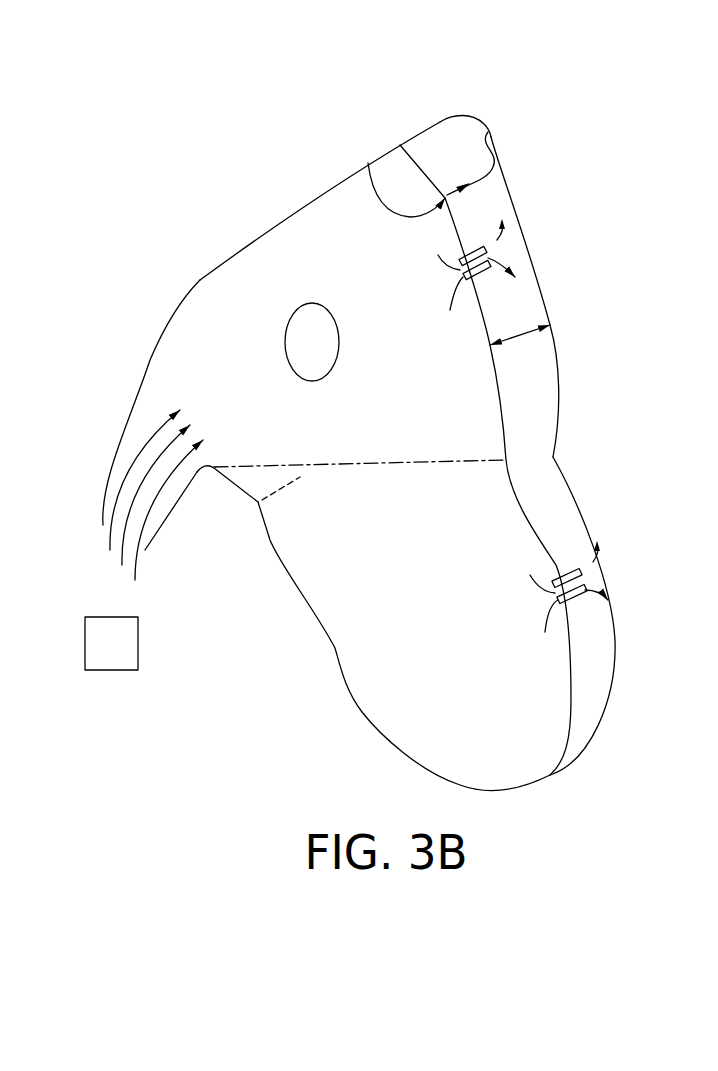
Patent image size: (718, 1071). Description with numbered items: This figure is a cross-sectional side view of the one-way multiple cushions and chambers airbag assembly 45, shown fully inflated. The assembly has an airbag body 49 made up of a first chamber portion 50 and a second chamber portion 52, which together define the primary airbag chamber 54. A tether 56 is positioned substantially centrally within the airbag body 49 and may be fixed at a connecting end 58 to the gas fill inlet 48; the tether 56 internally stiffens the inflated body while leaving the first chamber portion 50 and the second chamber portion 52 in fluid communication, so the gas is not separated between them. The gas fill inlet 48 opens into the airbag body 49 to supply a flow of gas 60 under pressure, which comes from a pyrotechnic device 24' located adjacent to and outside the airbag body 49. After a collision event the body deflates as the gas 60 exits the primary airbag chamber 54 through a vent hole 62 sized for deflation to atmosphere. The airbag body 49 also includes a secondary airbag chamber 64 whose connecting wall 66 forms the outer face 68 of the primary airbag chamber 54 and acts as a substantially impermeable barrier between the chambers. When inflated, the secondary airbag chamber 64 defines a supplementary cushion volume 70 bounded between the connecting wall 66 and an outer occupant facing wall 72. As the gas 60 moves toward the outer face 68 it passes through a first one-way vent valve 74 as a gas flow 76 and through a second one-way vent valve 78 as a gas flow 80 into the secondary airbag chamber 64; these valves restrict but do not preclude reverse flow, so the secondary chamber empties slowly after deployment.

The one-way multiple cushions and chambers airbag assembly 45 is at (380, 132).
The airbag body 49 is at (295, 210).
The first chamber portion 50 is at (258, 267).
The connecting wall 66 is at (490, 133).
The outer face 68 is at (368, 165).
The outer occupant facing wall 72 is at (567, 375).
The secondary airbag chamber 64 is at (588, 712).
The second chamber portion 52 is at (313, 562).
The primary airbag chamber 54 is at (374, 660).
The tether 56 is at (258, 502).
The connecting end 58 is at (212, 465).
The gas 60 is at (152, 500).
The gas fill inlet 48 is at (103, 522).
The vent hole 62 is at (300, 353).
The supplementary cushion volume 70 is at (520, 330).
The first one-way vent valve 74 is at (476, 250).
The gas flow 76 is at (500, 245).
The gas flow 80 is at (600, 572).
The second one-way vent valve 78 is at (585, 592).
The pyrotechnic device 24' is at (111, 643).